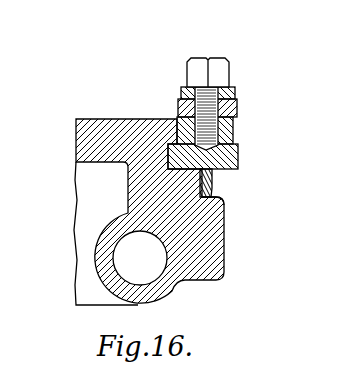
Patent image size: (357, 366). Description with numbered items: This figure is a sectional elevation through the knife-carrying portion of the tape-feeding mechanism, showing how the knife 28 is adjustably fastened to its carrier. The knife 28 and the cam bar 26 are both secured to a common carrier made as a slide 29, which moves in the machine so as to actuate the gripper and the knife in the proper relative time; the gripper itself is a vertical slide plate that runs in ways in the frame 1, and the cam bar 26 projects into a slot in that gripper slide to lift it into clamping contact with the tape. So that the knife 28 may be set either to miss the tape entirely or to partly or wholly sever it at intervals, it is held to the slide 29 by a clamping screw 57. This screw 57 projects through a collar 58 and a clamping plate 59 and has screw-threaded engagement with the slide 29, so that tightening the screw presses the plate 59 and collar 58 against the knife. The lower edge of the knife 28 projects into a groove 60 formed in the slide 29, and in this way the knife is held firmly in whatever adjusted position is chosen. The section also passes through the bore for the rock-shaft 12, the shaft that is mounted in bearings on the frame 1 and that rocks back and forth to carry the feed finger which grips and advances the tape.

The frame 1 is at (217, 252).
The rock-shaft 12 is at (133, 260).
The cam bar 26 is at (214, 193).
The knife 28 is at (233, 133).
The slide 29 is at (213, 174).
The clamping screw 57 is at (229, 77).
The collar 58 is at (181, 94).
The clamping plate 59 is at (237, 106).
The groove 60 is at (238, 153).